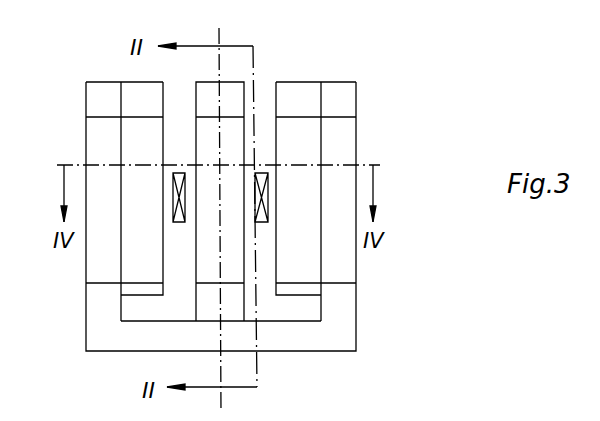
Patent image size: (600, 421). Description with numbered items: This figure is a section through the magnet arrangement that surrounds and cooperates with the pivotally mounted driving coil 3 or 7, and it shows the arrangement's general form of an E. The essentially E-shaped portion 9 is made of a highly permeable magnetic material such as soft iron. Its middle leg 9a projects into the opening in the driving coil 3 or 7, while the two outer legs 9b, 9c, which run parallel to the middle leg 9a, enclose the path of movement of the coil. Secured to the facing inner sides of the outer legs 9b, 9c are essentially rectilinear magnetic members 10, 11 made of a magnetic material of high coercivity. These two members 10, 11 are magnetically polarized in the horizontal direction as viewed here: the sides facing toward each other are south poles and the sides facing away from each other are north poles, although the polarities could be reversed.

The driving coil 3 is at (265, 192).
The driving coil 7 is at (179, 197).
The E-shaped portion 9 is at (143, 332).
The middle leg 9a is at (210, 88).
The outer leg 9b is at (99, 104).
The outer leg 9c is at (340, 98).
The magnetic member 10 is at (132, 92).
The magnetic member 11 is at (297, 92).